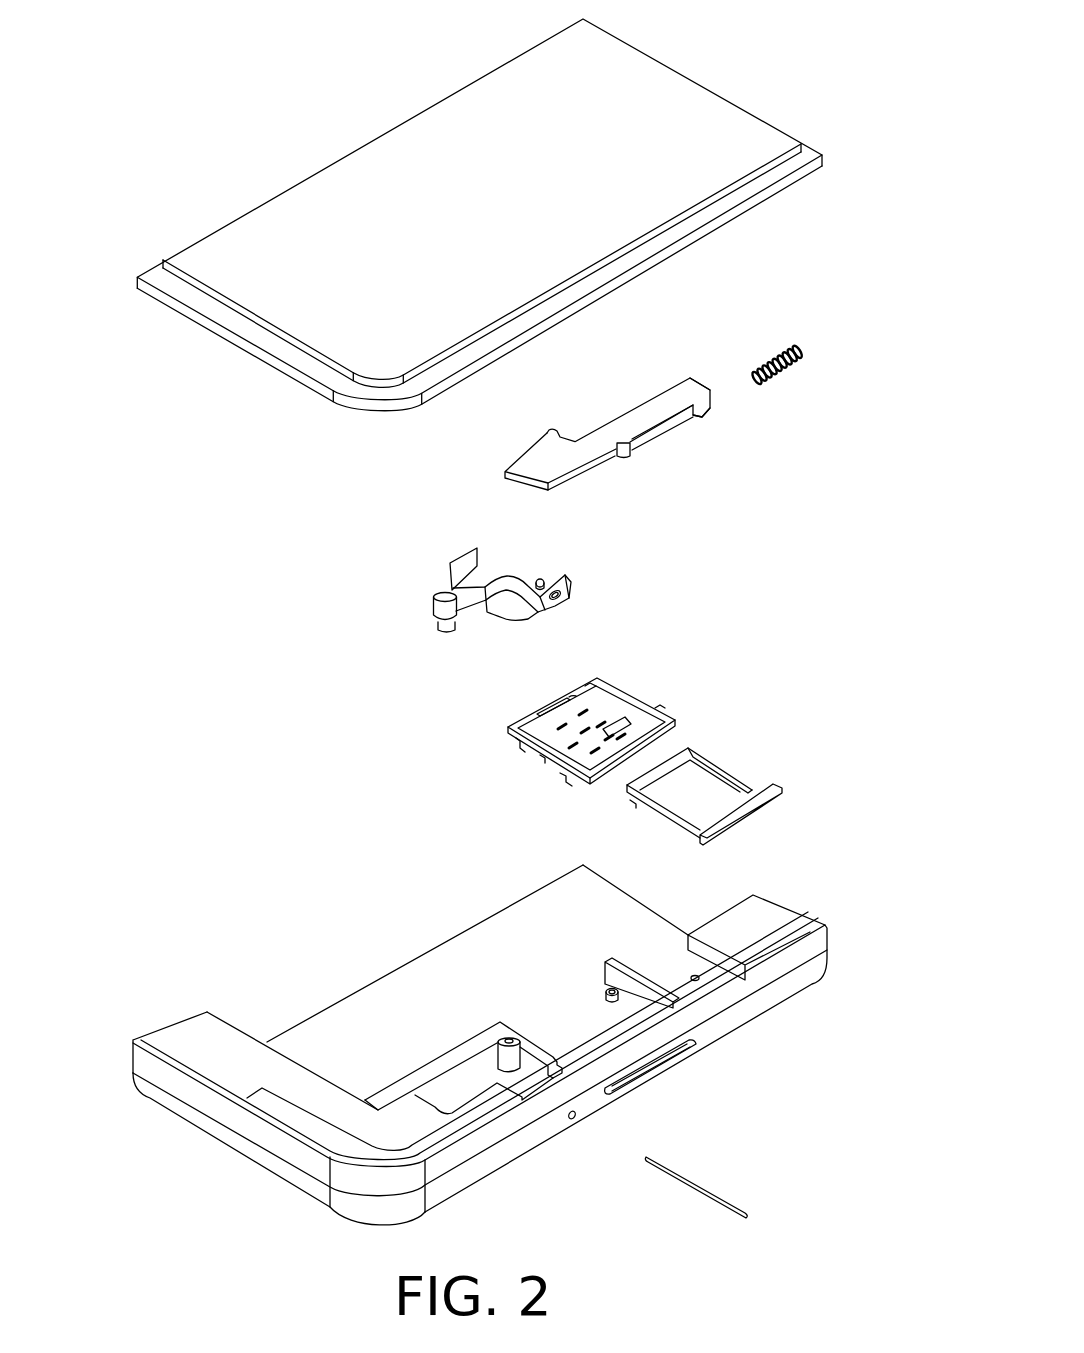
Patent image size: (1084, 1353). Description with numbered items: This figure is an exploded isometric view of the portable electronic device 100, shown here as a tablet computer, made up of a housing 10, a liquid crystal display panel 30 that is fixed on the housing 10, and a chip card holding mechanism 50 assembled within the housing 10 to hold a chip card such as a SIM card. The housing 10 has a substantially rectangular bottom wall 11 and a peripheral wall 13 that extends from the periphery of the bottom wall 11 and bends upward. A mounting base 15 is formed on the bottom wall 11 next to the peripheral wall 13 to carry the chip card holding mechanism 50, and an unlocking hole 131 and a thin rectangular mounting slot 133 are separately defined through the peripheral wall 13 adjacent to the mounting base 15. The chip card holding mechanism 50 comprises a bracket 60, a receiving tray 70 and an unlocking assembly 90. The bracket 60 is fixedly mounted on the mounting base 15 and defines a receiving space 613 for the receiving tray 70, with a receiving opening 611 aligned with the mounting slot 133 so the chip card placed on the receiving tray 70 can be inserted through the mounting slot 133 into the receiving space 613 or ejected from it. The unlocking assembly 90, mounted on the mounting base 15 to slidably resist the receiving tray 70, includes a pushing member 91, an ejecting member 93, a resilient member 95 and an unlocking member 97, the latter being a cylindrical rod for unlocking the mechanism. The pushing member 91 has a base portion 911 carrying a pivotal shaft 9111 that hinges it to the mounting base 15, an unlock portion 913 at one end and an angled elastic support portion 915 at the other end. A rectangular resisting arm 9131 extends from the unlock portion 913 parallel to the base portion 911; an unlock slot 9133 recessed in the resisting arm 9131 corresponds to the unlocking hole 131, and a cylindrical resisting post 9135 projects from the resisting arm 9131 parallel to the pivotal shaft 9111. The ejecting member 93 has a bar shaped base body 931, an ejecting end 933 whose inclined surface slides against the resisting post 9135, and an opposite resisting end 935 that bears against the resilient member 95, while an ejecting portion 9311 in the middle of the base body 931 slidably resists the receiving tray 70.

The portable electronic device 100 is at (286, 22).
The liquid crystal display (LCD) panel 30 is at (268, 245).
The housing 10 is at (797, 893).
The bottom wall 11 is at (375, 1022).
The peripheral wall 13 is at (493, 1135).
The mounting base 15 is at (578, 1033).
The unlocking hole 131 is at (577, 1117).
The mounting slot 133 is at (687, 1053).
The chip card holding mechanism 50 is at (758, 722).
The bracket 60 is at (623, 703).
The receiving opening 611 is at (623, 760).
The receiving space 613 is at (583, 732).
The receiving tray 70 is at (737, 772).
The unlocking assembly 90 is at (478, 627).
The pushing member 91 is at (431, 580).
The base portion 911 is at (433, 597).
The pivotal shaft 9111 is at (447, 631).
The unlock portion 913 is at (503, 585).
The resisting arm 9131 is at (568, 580).
The unlock slot 9133 is at (562, 600).
The resisting post 9135 is at (543, 578).
The support portion 915 is at (467, 550).
The ejecting member 93 is at (687, 456).
The base body 931 is at (617, 436).
The ejecting end 933 is at (540, 467).
The resisting end 935 is at (693, 382).
The ejecting portion 9311 is at (630, 455).
The resilient member 95 is at (793, 343).
The unlocking member 97 is at (688, 1182).